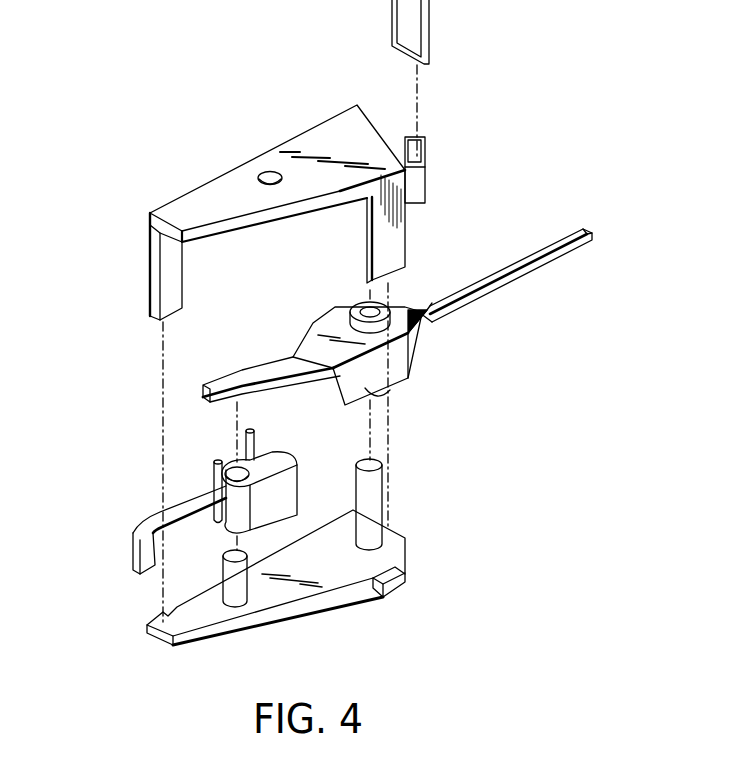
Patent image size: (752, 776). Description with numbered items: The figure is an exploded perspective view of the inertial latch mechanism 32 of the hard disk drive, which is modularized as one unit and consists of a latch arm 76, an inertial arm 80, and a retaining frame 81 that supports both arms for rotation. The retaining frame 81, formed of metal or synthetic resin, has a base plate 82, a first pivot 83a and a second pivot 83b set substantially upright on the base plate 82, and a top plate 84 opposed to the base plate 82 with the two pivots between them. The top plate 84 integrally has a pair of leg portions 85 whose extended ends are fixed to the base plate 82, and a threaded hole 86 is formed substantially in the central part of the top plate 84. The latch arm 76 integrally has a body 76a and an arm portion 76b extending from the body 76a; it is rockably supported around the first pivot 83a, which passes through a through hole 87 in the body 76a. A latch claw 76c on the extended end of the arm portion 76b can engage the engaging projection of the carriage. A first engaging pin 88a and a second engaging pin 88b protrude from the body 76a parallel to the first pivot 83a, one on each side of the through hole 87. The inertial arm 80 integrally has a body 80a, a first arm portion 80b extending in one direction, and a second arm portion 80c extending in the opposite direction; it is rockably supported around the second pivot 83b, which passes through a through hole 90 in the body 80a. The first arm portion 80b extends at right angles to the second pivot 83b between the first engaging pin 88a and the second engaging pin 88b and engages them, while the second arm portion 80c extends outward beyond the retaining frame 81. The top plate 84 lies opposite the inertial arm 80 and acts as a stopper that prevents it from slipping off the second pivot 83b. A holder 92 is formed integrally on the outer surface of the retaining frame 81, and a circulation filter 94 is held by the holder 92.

The inertial latch mechanism 32 is at (100, 223).
The latch arm 76 is at (108, 524).
The body 76a is at (275, 496).
The arm portion 76b is at (160, 508).
The latch claw 76c is at (130, 560).
The inertial arm 80 is at (305, 318).
The body 80a is at (415, 352).
The first arm portion 80b is at (248, 362).
The second arm portion 80c is at (495, 283).
The retaining frame 81 is at (290, 197).
The base plate 82 is at (312, 592).
The first pivot 83a is at (243, 590).
The second pivot 83b is at (360, 500).
The top plate 84 is at (333, 130).
The leg portions 85 is at (150, 270).
The threaded hole 86 is at (268, 170).
The through hole 87 is at (244, 478).
The first engaging pin 88a is at (216, 462).
The second engaging pin 88b is at (275, 414).
The through hole 90 is at (370, 305).
The holder 92 is at (427, 187).
The circulation filter 94 is at (413, 25).